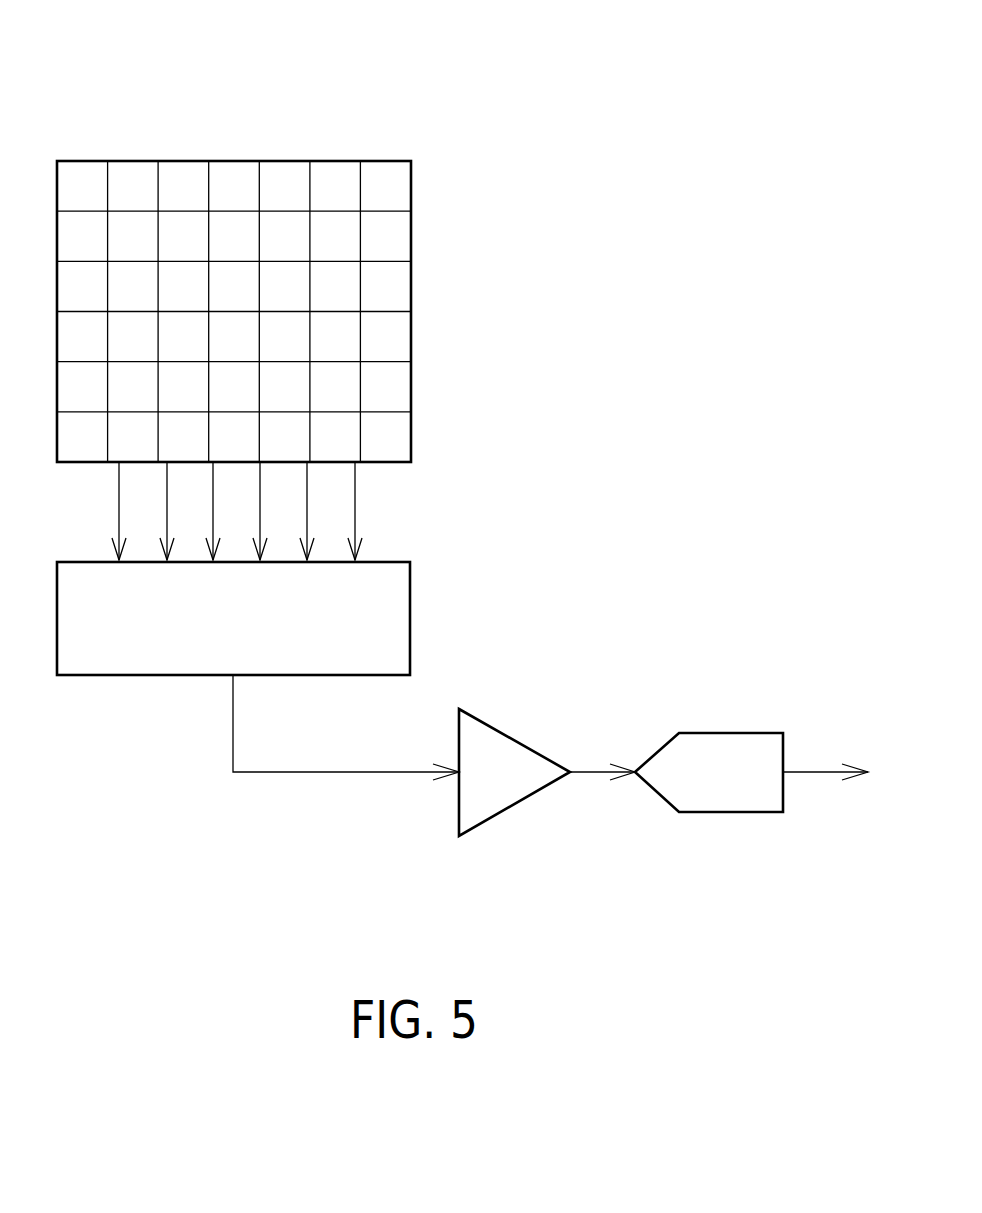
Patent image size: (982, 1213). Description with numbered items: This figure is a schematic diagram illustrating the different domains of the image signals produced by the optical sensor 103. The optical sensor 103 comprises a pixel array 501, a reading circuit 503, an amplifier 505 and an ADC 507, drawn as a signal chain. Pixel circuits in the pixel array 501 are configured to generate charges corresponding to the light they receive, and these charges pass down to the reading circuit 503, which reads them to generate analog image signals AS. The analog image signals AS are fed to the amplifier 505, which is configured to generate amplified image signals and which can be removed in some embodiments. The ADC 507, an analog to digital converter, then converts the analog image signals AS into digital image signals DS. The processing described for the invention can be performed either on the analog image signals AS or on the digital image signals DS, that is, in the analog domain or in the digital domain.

The optical sensor 103 is at (683, 127).
The pixel array 501 is at (416, 155).
The reading circuit 503 is at (412, 593).
The amplifier 505 is at (503, 733).
The ADC 507 is at (715, 733).